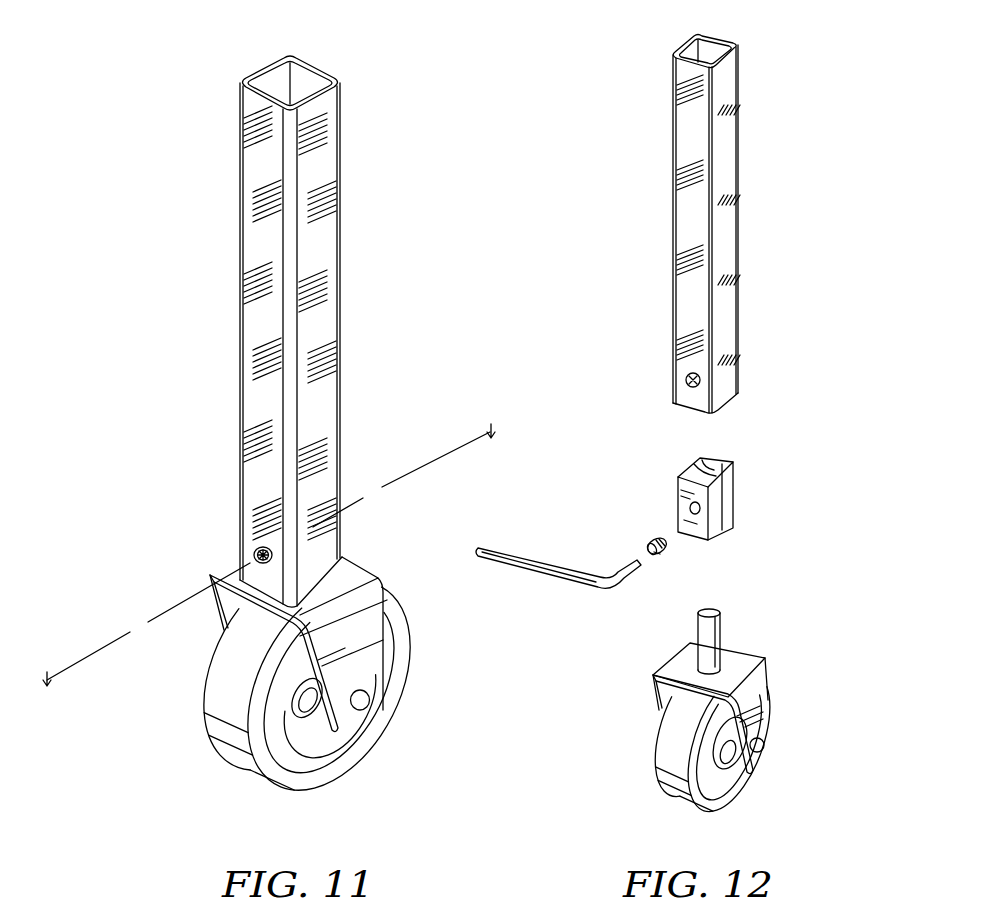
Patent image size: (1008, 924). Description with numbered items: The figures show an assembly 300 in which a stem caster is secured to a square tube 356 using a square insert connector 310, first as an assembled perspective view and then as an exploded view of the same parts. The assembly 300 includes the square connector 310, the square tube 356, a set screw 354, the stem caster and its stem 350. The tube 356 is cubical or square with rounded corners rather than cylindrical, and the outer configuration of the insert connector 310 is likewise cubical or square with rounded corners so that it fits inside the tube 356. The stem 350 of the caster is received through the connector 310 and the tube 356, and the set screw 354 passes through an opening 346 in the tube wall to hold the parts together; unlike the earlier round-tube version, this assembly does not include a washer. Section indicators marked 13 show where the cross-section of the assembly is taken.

In FIG. 11, the assembly 300 is at (160, 206).
In FIG. 12, the assembly 300 is at (802, 772).
In FIG. 11, the square tube 356 is at (315, 228).
In FIG. 12, the square tube 356 is at (722, 178).
In FIG. 11, the set screw 354 is at (255, 556).
In FIG. 12, the set screw 354 is at (650, 538).
In FIG. 12, the set screw hole 346 is at (700, 382).
In FIG. 12, the square connector 310 is at (730, 490).
In FIG. 12, the stem 350 is at (712, 630).
In FIG. 11, the section line for FIG. 13 is at (274, 572).